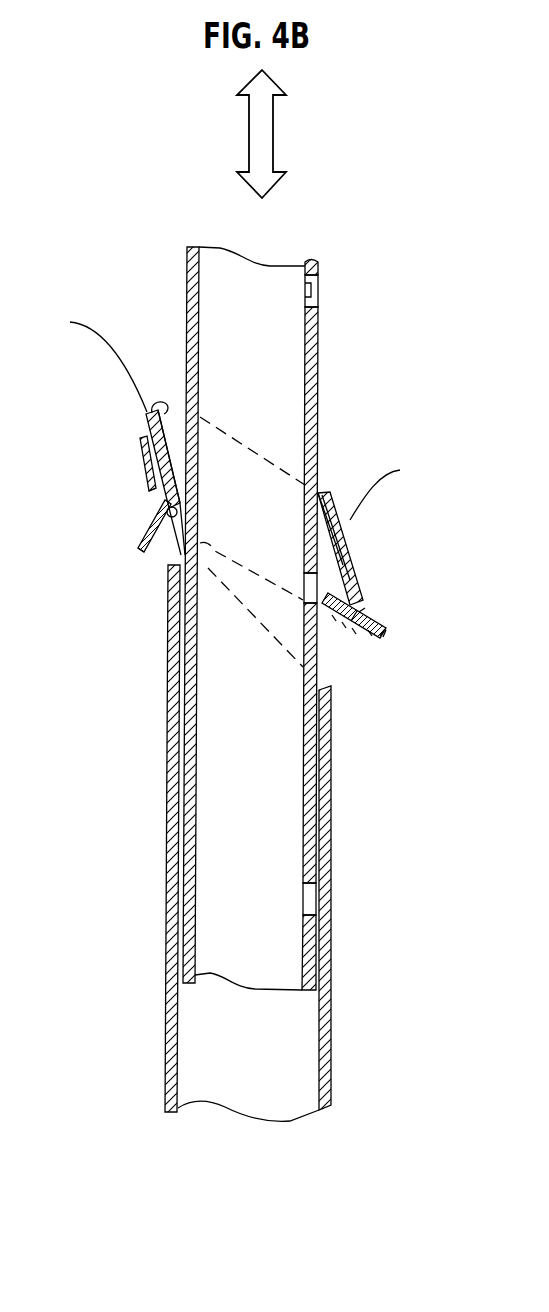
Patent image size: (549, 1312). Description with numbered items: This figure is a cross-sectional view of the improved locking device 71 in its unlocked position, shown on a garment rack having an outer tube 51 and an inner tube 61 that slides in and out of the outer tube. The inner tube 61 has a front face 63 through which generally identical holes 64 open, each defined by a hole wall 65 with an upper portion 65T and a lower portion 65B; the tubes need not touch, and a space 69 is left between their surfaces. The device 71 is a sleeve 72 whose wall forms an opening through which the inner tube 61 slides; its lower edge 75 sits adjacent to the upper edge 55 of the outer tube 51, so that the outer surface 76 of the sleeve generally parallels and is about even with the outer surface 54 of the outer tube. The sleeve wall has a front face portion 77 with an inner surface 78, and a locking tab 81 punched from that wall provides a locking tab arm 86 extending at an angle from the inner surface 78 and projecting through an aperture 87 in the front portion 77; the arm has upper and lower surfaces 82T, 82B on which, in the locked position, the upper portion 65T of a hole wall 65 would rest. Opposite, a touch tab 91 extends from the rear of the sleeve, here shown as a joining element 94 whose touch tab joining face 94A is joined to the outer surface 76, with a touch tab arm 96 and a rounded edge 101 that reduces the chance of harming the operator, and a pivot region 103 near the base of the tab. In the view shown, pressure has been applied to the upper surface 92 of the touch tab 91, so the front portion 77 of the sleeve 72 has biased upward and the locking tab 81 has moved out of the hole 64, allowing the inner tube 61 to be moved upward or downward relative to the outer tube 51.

The outer tube 51 is at (366, 862).
The outer surface of the outer tube 54 is at (332, 822).
The upper edge of the outer tube 55 is at (338, 660).
The inner tube 61 is at (360, 390).
The front face 63 is at (318, 333).
The hole 64 is at (334, 298).
The hole wall 65 is at (318, 288).
The upper portion of the hole wall 65T is at (352, 548).
The bottom end of latch 65B is at (340, 645).
The space 69 is at (170, 812).
The locking device 71 is at (383, 600).
The sleeve 72 is at (142, 440).
The lower edge of the sleeve 75 is at (370, 640).
The outer surface of the sleeve wall 76 is at (140, 456).
The front face portion of the sleeve wall 77 is at (338, 500).
The inner surface of the front portion 78 is at (355, 645).
The locking tab 81 is at (386, 640).
The top shoulder 82T is at (367, 604).
The bottom shoulder 82B is at (345, 645).
The locking tab arm 86 is at (385, 636).
The aperture 87 is at (374, 583).
The touch tab 91 is at (155, 558).
The upper surface of the touch tab 92 is at (142, 537).
The joining element 94 is at (128, 445).
The touch tab joining face 94A is at (152, 488).
The touch tab arm 96 is at (143, 553).
The rounded edge 101 is at (163, 398).
The pivot pin 103 is at (156, 520).